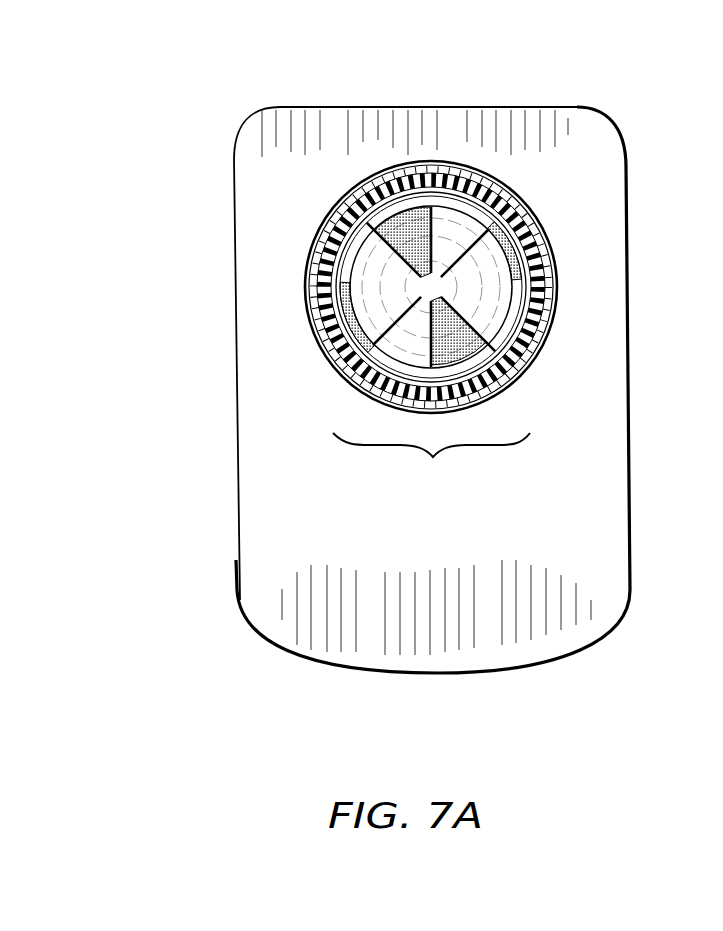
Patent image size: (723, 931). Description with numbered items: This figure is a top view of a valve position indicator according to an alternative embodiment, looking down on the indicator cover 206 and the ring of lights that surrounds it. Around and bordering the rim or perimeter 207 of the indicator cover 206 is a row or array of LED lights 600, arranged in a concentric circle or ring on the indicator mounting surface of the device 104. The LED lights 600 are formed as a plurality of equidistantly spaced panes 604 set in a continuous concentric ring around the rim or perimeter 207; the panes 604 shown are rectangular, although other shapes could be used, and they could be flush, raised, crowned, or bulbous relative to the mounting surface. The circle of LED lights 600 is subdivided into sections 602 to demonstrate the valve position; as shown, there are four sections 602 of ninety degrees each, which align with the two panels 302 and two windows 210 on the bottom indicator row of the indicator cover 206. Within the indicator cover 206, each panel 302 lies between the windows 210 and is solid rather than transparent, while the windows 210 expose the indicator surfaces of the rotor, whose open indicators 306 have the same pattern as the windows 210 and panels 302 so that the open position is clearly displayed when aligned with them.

The device housing 104 is at (618, 83).
The indicator cover 206 is at (538, 240).
The rim or perimeter 207 is at (317, 235).
The windows 210 is at (548, 303).
The panel 302 is at (523, 307).
The open indicators 306 is at (418, 205).
The LED lights 600 is at (315, 333).
The sections 602 is at (433, 457).
The panes 604 is at (312, 276).